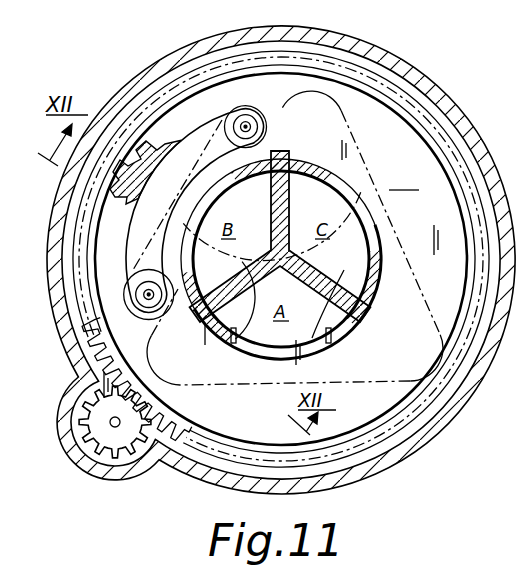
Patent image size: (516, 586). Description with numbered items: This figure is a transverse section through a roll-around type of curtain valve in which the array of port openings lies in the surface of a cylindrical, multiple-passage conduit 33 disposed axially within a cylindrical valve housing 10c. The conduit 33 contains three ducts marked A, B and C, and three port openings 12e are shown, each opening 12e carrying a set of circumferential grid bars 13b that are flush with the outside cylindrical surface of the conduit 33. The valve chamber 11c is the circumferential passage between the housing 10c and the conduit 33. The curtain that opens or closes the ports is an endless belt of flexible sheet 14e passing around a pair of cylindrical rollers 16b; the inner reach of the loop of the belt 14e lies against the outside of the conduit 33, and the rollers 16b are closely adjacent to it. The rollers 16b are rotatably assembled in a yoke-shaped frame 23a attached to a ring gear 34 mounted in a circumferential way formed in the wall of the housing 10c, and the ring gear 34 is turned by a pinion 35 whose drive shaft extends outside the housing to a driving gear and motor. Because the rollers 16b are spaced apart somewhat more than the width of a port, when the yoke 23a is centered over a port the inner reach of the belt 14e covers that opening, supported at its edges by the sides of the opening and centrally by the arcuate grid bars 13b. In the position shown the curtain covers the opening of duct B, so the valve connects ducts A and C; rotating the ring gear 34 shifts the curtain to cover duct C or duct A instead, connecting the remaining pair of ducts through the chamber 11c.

The valve housing 10c is at (400, 460).
The valve chamber 11c is at (295, 238).
The port opening 12e is at (193, 247).
The grid bars 13b is at (352, 272).
The flexible sheet belt 14e is at (219, 106).
The cylindrical rollers 16b is at (250, 106).
The yoke-shaped frame 23a is at (190, 147).
The multiple-passage conduit 33 is at (378, 308).
The ring gear 34 is at (150, 455).
The pinion 35 is at (98, 457).